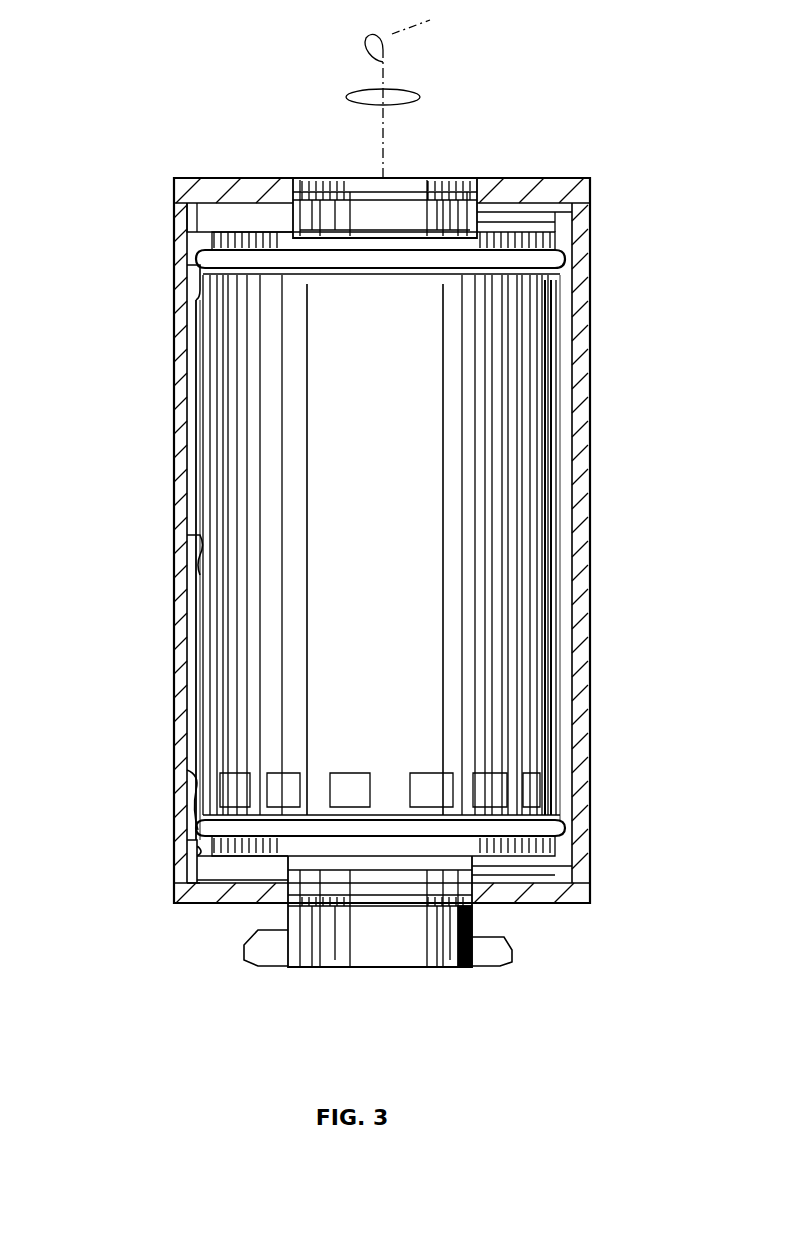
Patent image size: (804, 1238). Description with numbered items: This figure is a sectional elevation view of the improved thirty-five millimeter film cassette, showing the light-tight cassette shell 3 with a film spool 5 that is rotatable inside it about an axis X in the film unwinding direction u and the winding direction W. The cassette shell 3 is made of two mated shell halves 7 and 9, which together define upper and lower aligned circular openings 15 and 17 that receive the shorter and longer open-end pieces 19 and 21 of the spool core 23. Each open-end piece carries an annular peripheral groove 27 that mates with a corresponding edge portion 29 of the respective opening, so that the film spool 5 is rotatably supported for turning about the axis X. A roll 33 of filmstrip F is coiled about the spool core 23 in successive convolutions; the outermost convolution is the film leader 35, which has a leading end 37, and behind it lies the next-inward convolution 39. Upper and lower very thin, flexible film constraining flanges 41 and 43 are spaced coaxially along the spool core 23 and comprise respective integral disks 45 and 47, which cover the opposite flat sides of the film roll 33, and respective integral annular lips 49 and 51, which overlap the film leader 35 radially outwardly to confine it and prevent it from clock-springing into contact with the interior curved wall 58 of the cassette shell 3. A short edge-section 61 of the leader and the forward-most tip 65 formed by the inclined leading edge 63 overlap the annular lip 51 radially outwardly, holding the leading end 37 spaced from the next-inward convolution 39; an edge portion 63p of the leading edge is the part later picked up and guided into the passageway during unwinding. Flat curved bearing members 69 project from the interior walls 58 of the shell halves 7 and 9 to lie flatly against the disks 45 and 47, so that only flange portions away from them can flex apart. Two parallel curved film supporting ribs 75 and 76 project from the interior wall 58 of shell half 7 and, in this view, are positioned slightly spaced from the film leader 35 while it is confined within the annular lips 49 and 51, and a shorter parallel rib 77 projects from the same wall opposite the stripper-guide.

The cassette shell 3 is at (178, 176).
The film spool 5 is at (553, 663).
The shell half 7 is at (557, 180).
The shell half 9 is at (218, 178).
The upper circular opening 15 is at (461, 200).
The lower circular opening 17 is at (298, 932).
The open-end piece 19 is at (320, 178).
The open-end piece 21 is at (459, 966).
The spool core 23 is at (296, 177).
The annular peripheral groove 27 is at (353, 195).
The edge portion 29 is at (470, 200).
The film roll 33 is at (557, 411).
The film leader 35 is at (534, 490).
The leading end 37 is at (200, 745).
The next-inward convolution 39 is at (217, 666).
The film constraining flange 41 is at (196, 230).
The film constraining flange 43 is at (581, 856).
The disk 45 is at (498, 228).
The disk 47 is at (517, 896).
The annular lip 49 is at (214, 240).
The annular lip 51 is at (576, 846).
The interior curved wall 58 is at (571, 545).
The edge-section 61 is at (203, 872).
The leading edge 63 is at (208, 415).
The edge portion 63p is at (196, 790).
The forward-most tip 65 is at (195, 841).
The bearing member 69 is at (527, 221).
The film supporting rib 75 is at (197, 295).
The film supporting rib 76 is at (200, 566).
The film supporting rib 77 is at (205, 776).
The filmstrip F is at (554, 583).
The axis X is at (398, 90).
The winding direction W is at (362, 92).
The unwinding direction u is at (402, 92).